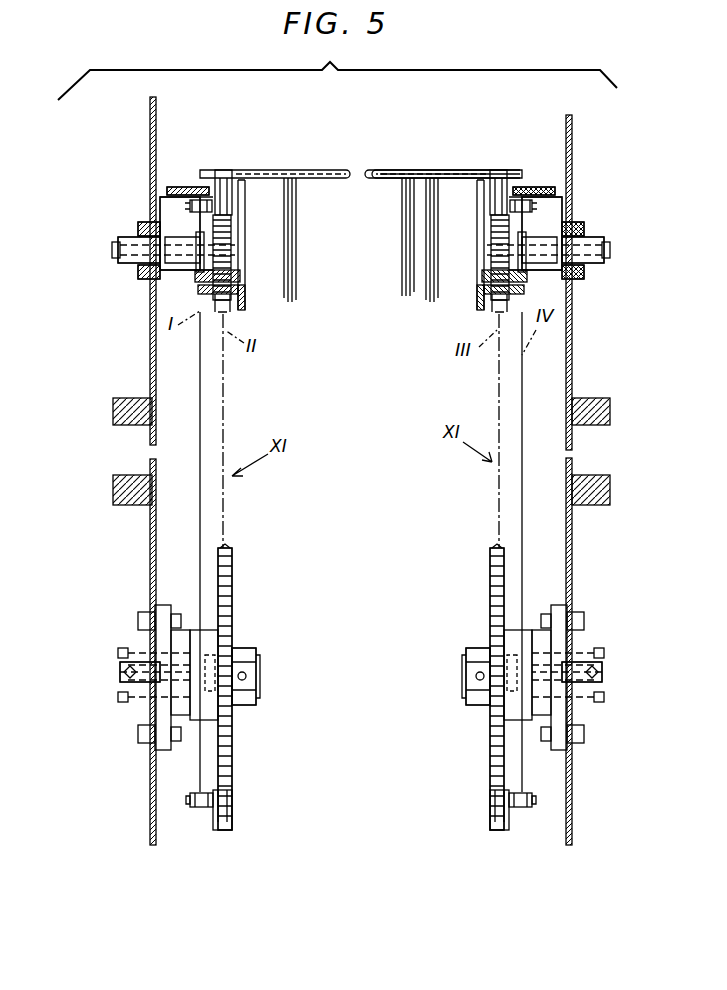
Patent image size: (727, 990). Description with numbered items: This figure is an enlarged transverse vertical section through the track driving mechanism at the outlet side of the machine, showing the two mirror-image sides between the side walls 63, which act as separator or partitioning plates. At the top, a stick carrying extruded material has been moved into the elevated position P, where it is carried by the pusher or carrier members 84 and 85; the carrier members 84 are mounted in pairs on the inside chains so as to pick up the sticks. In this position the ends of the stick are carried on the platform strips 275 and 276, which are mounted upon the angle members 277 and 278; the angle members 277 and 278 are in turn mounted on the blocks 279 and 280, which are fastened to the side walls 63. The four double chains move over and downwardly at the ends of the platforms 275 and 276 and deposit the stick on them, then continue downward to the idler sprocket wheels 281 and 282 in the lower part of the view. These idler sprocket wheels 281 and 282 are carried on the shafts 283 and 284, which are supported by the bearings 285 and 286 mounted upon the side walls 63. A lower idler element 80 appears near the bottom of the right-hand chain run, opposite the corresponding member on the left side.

The side wall 63 is at (156, 350).
The carrier member 84 is at (224, 176).
The elevated position P is at (387, 172).
The platform 275 is at (172, 187).
The angle member 277 is at (160, 198).
The block 279 is at (150, 262).
The carrier member 85 is at (500, 172).
The platform 276 is at (546, 187).
The angle member 278 is at (562, 198).
The block 280 is at (572, 255).
The idler sprocket wheel 281 is at (232, 552).
The idler sprocket wheel 282 is at (492, 554).
The shaft 283 is at (258, 676).
The shaft 284 is at (466, 676).
The bearing 285 is at (165, 701).
The bearing 286 is at (590, 703).
The lower idler bracket 80 is at (500, 830).